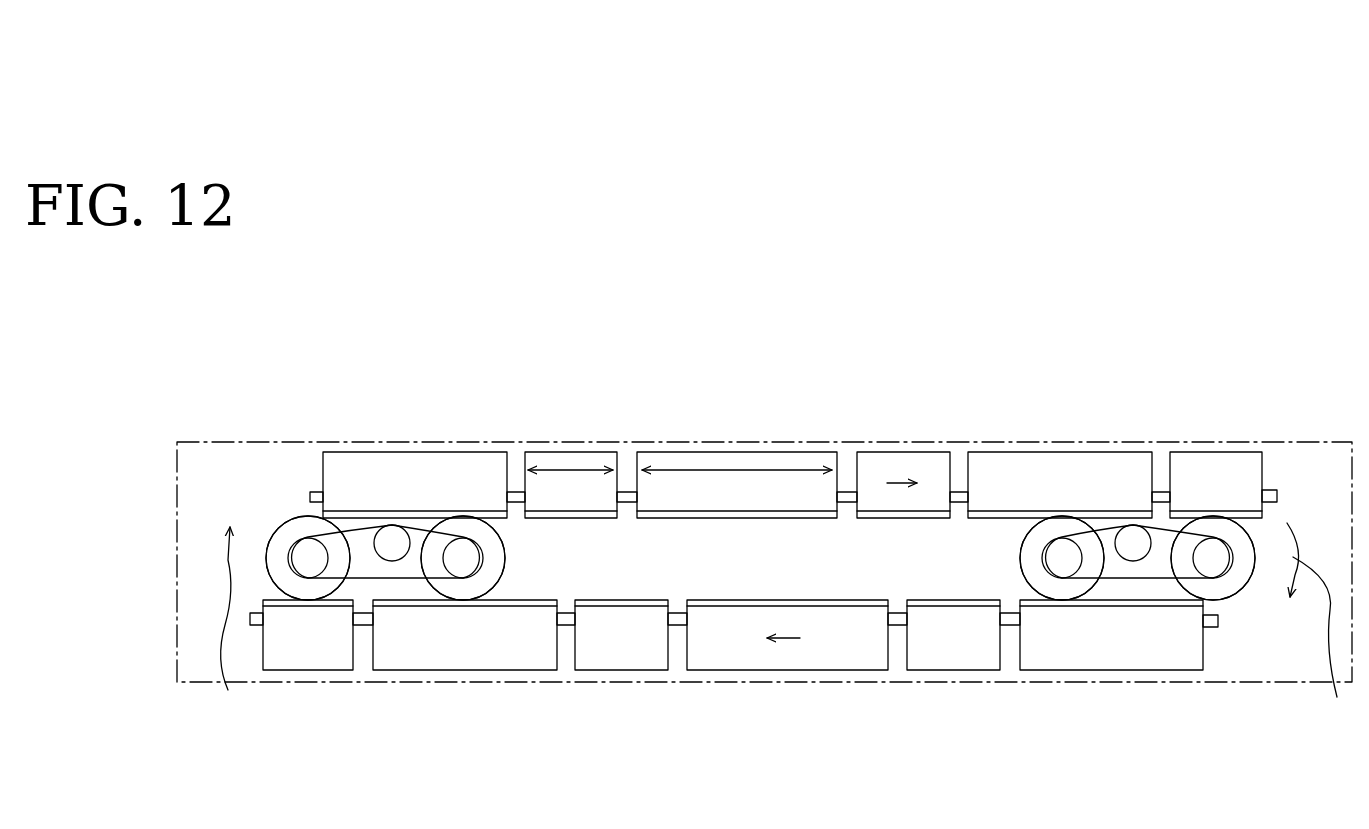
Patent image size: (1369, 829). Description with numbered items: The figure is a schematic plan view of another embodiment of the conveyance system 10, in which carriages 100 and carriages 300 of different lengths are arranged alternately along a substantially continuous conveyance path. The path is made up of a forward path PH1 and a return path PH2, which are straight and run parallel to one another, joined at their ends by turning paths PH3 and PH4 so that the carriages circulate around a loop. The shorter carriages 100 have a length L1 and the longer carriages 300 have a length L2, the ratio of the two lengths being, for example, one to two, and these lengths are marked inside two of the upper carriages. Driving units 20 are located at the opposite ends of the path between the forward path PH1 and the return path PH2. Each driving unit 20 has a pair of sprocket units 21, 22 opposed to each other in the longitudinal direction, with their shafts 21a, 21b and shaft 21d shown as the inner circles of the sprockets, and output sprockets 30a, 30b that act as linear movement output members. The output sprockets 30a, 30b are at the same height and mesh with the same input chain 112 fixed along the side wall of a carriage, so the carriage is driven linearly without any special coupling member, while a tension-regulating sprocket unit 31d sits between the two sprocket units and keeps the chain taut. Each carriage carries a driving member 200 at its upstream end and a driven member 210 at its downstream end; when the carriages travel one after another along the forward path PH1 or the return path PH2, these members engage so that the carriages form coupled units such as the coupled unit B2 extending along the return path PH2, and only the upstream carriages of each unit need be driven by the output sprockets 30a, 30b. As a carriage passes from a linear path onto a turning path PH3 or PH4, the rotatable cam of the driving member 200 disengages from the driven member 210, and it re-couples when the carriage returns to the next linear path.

The image forming apparatus 10 is at (1010, 283).
The driving unit 20 is at (780, 479).
The sprocket unit 21 is at (427, 520).
The sprocket unit 22 is at (305, 517).
The shaft 21a is at (463, 550).
The shaft 21b is at (310, 557).
The belt roller 21d is at (1223, 570).
The output sprocket 30a is at (490, 582).
The output sprocket 30b is at (308, 590).
The sprocket unit 31d is at (392, 563).
The conveyance carriage 100 is at (773, 450).
The carriage 300 is at (900, 450).
The chain 112 is at (577, 518).
The driving member 200 is at (1207, 627).
The driven member 210 is at (258, 625).
The forward path PH1 is at (790, 638).
The return path PH2 is at (895, 490).
The turning path PH3 is at (212, 629).
The turning path PH4 is at (1314, 630).
The length L1 is at (570, 489).
The length L2 is at (737, 489).
The coupled unit B2 is at (922, 360).